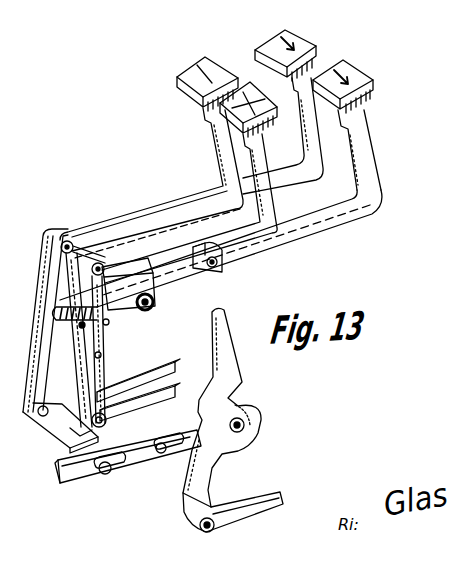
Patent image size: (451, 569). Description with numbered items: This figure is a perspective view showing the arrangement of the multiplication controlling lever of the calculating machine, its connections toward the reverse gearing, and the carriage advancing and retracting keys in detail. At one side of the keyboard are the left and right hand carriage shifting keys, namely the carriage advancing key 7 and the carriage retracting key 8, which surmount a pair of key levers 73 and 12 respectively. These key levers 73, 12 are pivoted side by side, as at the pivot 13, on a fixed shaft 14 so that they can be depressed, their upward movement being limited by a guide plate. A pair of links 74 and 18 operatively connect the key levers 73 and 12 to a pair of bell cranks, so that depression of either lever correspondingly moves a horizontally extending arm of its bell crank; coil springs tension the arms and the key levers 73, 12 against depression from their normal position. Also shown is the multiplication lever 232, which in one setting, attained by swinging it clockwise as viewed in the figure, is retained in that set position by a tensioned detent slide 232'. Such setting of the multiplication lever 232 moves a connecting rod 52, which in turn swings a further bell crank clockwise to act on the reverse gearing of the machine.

The carriage advancing key 7 is at (292, 44).
The carriage retracting key 8 is at (353, 75).
The key lever 73 is at (353, 190).
The key lever 12 is at (313, 226).
The pivot 13 is at (104, 289).
The fixed shaft 14 is at (157, 303).
The link 74 is at (176, 369).
The link 18 is at (173, 398).
The multiplication lever 232 is at (240, 403).
The detent slide 232' is at (128, 459).
The connecting rod 52 is at (260, 508).